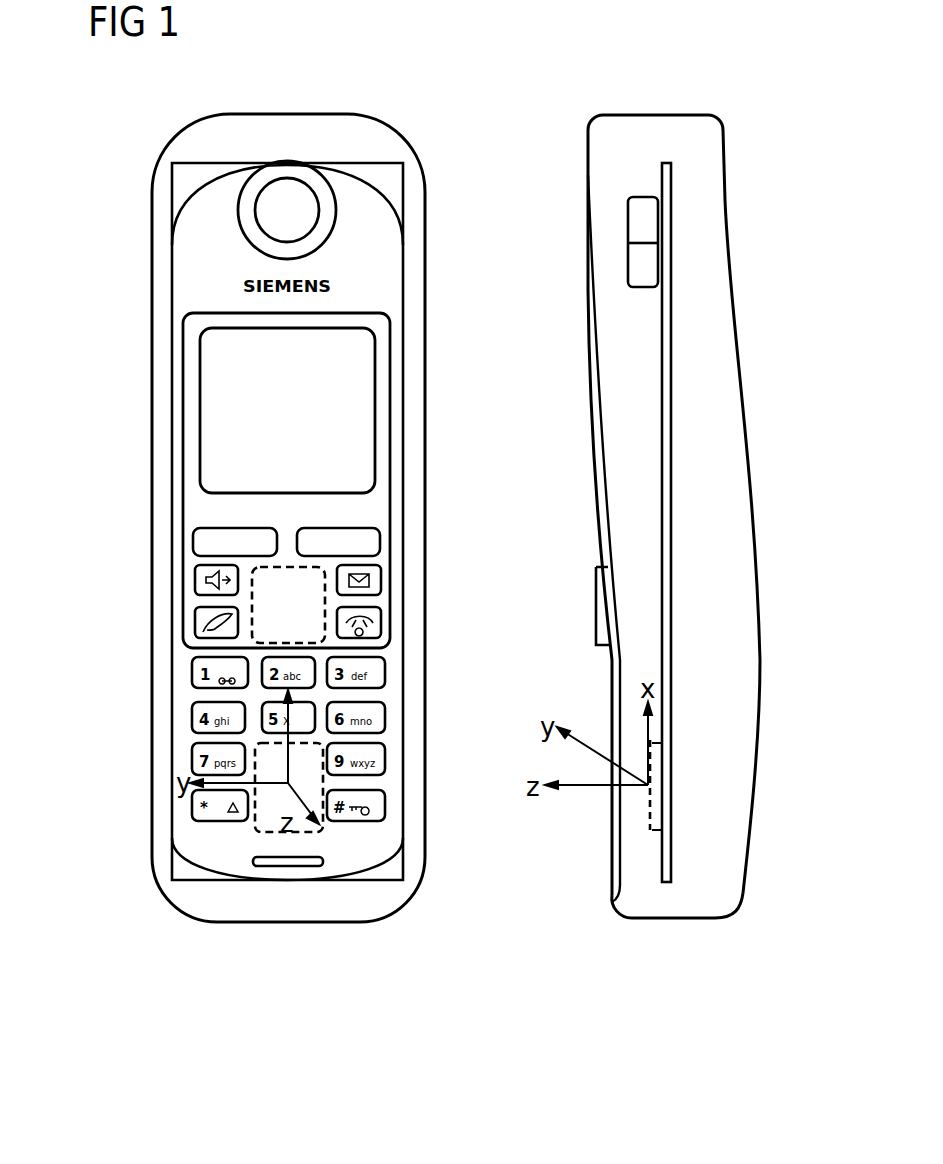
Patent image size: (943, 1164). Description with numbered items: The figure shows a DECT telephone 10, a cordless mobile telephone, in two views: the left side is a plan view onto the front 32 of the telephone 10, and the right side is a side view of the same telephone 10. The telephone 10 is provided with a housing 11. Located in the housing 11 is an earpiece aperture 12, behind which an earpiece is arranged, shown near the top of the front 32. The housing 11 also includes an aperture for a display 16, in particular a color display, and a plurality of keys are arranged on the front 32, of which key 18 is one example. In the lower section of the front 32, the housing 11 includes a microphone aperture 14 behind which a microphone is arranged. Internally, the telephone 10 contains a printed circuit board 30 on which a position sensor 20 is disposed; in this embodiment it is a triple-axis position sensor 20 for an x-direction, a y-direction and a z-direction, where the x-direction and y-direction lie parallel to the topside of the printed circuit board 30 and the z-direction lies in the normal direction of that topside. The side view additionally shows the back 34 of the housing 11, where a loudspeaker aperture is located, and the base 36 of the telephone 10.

The DECT telephone 10 is at (404, 130).
The housing 11 is at (152, 428).
The earpiece aperture 12 is at (288, 170).
The microphone aperture 14 is at (283, 866).
The display 16 is at (374, 418).
The key 18 is at (288, 567).
The position sensor 20 is at (302, 830).
The printed circuit board 30 is at (628, 921).
The front 32 is at (425, 523).
The back 34 is at (745, 460).
The base 36 is at (705, 921).